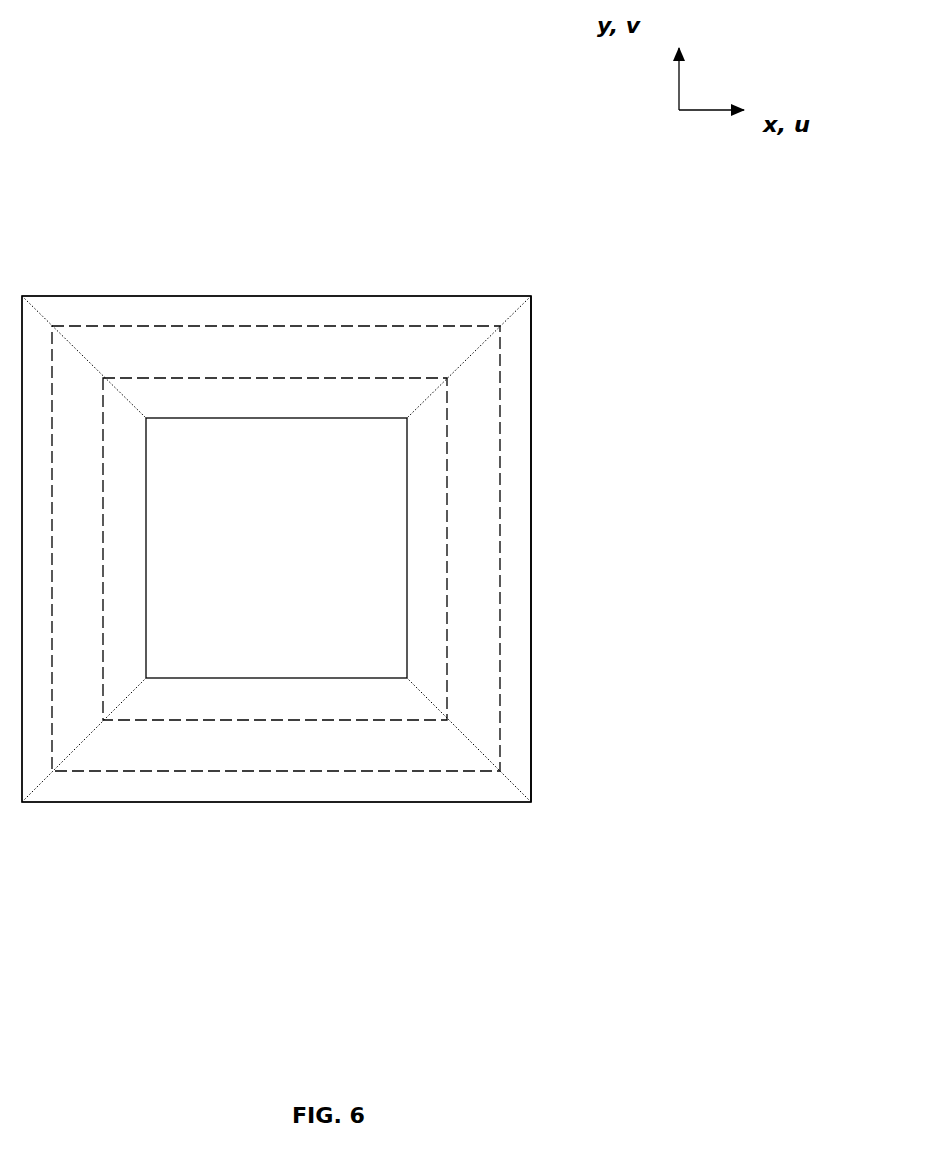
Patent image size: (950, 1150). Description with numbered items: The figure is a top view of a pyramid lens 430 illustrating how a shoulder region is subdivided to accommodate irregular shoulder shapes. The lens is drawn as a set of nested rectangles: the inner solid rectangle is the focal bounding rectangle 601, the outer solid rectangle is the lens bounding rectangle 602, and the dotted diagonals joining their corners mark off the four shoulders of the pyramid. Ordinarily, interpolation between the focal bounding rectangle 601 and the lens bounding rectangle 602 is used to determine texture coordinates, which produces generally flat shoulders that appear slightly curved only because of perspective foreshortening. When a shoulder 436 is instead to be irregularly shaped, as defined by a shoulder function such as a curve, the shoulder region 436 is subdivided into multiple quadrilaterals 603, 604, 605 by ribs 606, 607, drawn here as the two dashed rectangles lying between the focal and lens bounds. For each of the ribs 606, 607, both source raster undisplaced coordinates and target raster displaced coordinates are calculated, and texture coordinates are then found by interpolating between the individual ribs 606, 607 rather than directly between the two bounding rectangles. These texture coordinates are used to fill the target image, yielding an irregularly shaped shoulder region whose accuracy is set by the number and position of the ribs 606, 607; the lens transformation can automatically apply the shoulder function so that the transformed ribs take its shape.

The pyramid lens 430 is at (290, 199).
The shoulder region 436 is at (481, 358).
The focal bounding rectangle 601 is at (407, 470).
The lens bounding rectangle 602 is at (543, 752).
The quadrilateral 603 is at (515, 342).
The quadrilateral 604 is at (463, 393).
The quadrilateral 605 is at (372, 549).
The rib 606 is at (512, 607).
The rib 607 is at (458, 532).